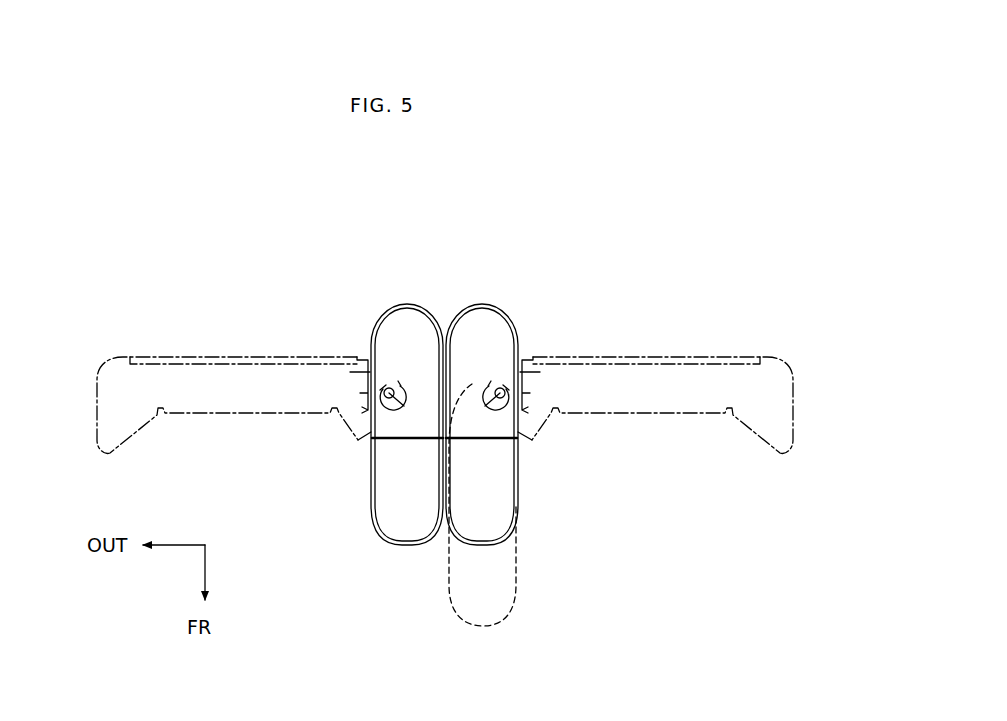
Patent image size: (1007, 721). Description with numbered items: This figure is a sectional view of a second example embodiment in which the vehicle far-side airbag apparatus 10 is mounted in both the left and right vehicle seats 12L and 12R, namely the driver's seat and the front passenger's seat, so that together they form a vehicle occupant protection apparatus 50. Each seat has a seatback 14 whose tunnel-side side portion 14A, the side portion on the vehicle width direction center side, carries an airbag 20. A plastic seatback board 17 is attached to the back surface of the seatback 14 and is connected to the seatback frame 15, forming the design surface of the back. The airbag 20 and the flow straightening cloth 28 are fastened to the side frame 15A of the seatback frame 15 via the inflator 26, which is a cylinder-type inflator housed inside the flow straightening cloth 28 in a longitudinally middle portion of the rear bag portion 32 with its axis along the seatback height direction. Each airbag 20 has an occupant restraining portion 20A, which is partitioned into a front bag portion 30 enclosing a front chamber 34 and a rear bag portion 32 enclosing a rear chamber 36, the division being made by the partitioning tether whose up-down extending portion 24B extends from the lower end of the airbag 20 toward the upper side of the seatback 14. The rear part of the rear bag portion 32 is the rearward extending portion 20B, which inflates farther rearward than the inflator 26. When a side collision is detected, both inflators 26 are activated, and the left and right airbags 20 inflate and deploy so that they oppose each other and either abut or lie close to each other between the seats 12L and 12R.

The vehicle far-side airbag apparatus 10 is at (352, 600).
The right vehicle seat 12R is at (227, 405).
The left vehicle seat 12L is at (662, 405).
The seatback 14 is at (219, 418).
The tunnel-side side portion 14A is at (354, 443).
The seatback frame 15 is at (445, 385).
The side frame 15A is at (362, 355).
The seatback board 17 is at (220, 356).
The airbag 20 is at (376, 539).
The occupant restraining portion 20A is at (374, 512).
The rearward extending portion 20B is at (378, 328).
The up-down extending portion 24B is at (371, 462).
The inflator 26 is at (413, 412).
The flow straightening cloth 28 is at (403, 379).
The front bag portion 30 is at (392, 550).
The rear bag portion 32 is at (386, 318).
The front chamber 34 is at (413, 532).
The rear chamber 36 is at (413, 308).
The vehicle occupant protection apparatus 50 is at (622, 246).